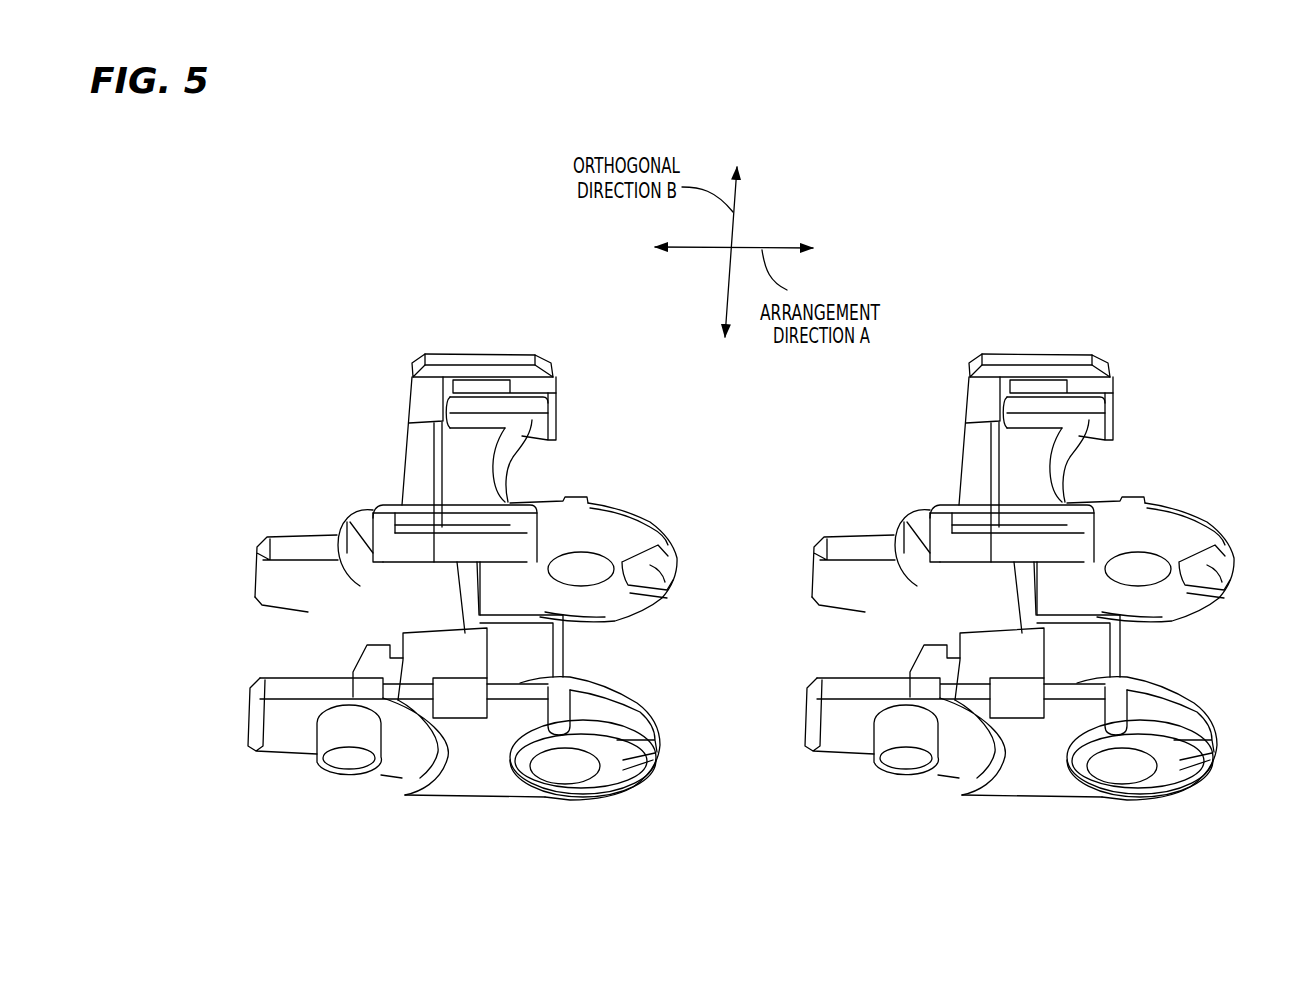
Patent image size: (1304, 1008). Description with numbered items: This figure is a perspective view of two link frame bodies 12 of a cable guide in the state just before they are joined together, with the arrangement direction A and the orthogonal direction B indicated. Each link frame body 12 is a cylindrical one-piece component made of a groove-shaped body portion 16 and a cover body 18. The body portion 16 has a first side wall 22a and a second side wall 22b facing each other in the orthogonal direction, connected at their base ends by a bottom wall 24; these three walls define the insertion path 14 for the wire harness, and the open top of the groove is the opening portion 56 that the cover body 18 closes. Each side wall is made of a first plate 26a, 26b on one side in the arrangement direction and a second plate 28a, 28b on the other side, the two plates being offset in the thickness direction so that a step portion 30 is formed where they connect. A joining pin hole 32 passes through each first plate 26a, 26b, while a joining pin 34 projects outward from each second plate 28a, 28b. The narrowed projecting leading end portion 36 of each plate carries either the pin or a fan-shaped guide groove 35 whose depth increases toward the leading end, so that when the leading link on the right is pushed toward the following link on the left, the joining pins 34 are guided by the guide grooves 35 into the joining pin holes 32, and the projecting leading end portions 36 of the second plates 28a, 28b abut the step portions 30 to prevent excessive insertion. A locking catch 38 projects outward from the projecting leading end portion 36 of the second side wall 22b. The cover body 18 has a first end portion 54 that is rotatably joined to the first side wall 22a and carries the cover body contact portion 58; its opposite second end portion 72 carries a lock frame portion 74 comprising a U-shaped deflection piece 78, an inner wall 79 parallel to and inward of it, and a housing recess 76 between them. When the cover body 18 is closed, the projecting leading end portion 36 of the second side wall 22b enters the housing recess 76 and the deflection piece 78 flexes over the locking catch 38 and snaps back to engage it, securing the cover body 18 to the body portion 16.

The link frame body 12 is at (498, 279).
The insertion path 14 is at (598, 657).
The body portion 16 is at (443, 811).
The cover body 18 is at (379, 426).
The first side wall 22a is at (503, 580).
The second side wall 22b is at (472, 770).
The bottom wall 24 is at (537, 648).
The first plate 26a is at (623, 540).
The first plate 26b is at (627, 780).
The second plate 28a is at (293, 577).
The second plate 28b is at (280, 722).
The step portion 30 is at (477, 607).
The joining pin hole 32 is at (577, 552).
The joining pin 34 is at (343, 552).
The guide groove 35 is at (650, 565).
The projecting leading end portion 36 is at (553, 512).
The locking catch 38 is at (403, 633).
The first end portion 54 is at (525, 496).
The opening portion 56 is at (497, 673).
The cover body contact portion 58 is at (450, 527).
The second end portion 72 is at (568, 419).
The lock frame portion 74 is at (557, 347).
The housing recess 76 is at (530, 393).
The deflection piece 78 is at (476, 352).
The inner wall 79 is at (473, 403).